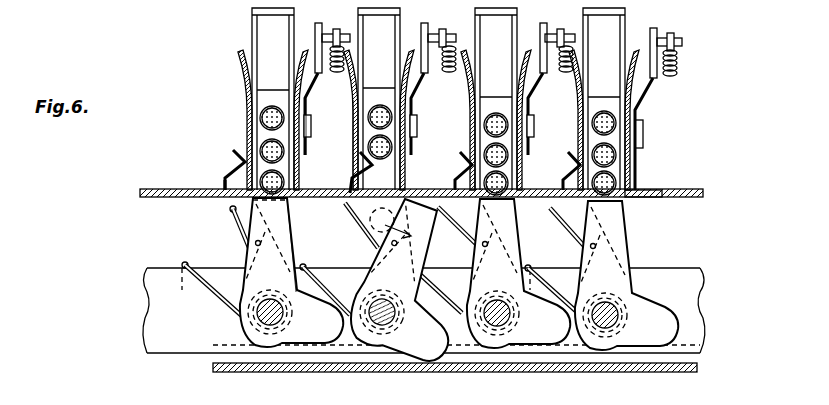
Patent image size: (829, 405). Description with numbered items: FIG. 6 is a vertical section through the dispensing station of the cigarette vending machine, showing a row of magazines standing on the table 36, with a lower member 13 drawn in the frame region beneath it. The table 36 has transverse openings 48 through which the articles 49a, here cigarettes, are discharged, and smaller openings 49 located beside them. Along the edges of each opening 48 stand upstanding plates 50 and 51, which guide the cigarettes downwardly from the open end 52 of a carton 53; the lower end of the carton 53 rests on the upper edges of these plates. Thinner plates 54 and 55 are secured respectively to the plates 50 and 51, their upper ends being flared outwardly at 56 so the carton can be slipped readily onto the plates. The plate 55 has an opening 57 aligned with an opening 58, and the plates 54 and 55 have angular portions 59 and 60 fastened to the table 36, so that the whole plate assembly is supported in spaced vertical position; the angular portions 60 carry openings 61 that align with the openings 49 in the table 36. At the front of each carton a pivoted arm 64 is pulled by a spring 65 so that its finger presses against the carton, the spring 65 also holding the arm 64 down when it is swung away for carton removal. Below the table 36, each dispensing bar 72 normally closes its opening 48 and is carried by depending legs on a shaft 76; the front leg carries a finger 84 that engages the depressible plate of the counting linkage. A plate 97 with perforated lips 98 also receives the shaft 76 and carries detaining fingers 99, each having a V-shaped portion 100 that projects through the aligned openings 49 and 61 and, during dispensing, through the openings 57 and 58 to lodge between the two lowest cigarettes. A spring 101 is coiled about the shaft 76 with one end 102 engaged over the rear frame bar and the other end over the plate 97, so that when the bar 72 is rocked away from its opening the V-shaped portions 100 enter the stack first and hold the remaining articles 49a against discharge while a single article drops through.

The rocker arm 13 is at (622, 253).
The table 36 is at (674, 197).
The openings 48 is at (516, 208).
The smaller openings 49 is at (297, 222).
The articles 49a is at (262, 112).
The upstanding plate 50 is at (636, 165).
The upstanding plate 51 is at (530, 112).
The open end of carton 52 is at (356, 92).
The carton 53 is at (252, 20).
The thinner plate 54 is at (534, 140).
The thinner plate 55 is at (354, 101).
The flared upper ends 56 is at (472, 64).
The opening 57 is at (336, 118).
The opening 58 is at (340, 140).
The angular portion 59 is at (642, 190).
The angular portion 60 is at (456, 188).
The openings 61 is at (345, 190).
The pivoted arm 64 is at (650, 40).
The spring 65 is at (344, 50).
The dispensing bar 72 is at (296, 208).
The shaft 76 is at (460, 312).
The finger 84 is at (325, 310).
The plate 97 is at (228, 209).
The perforated lips 98 is at (240, 264).
The detaining fingers 99 is at (226, 182).
The V-shaped portion 100 is at (240, 160).
The spring 101 is at (243, 328).
The end of spring 102 is at (297, 240).